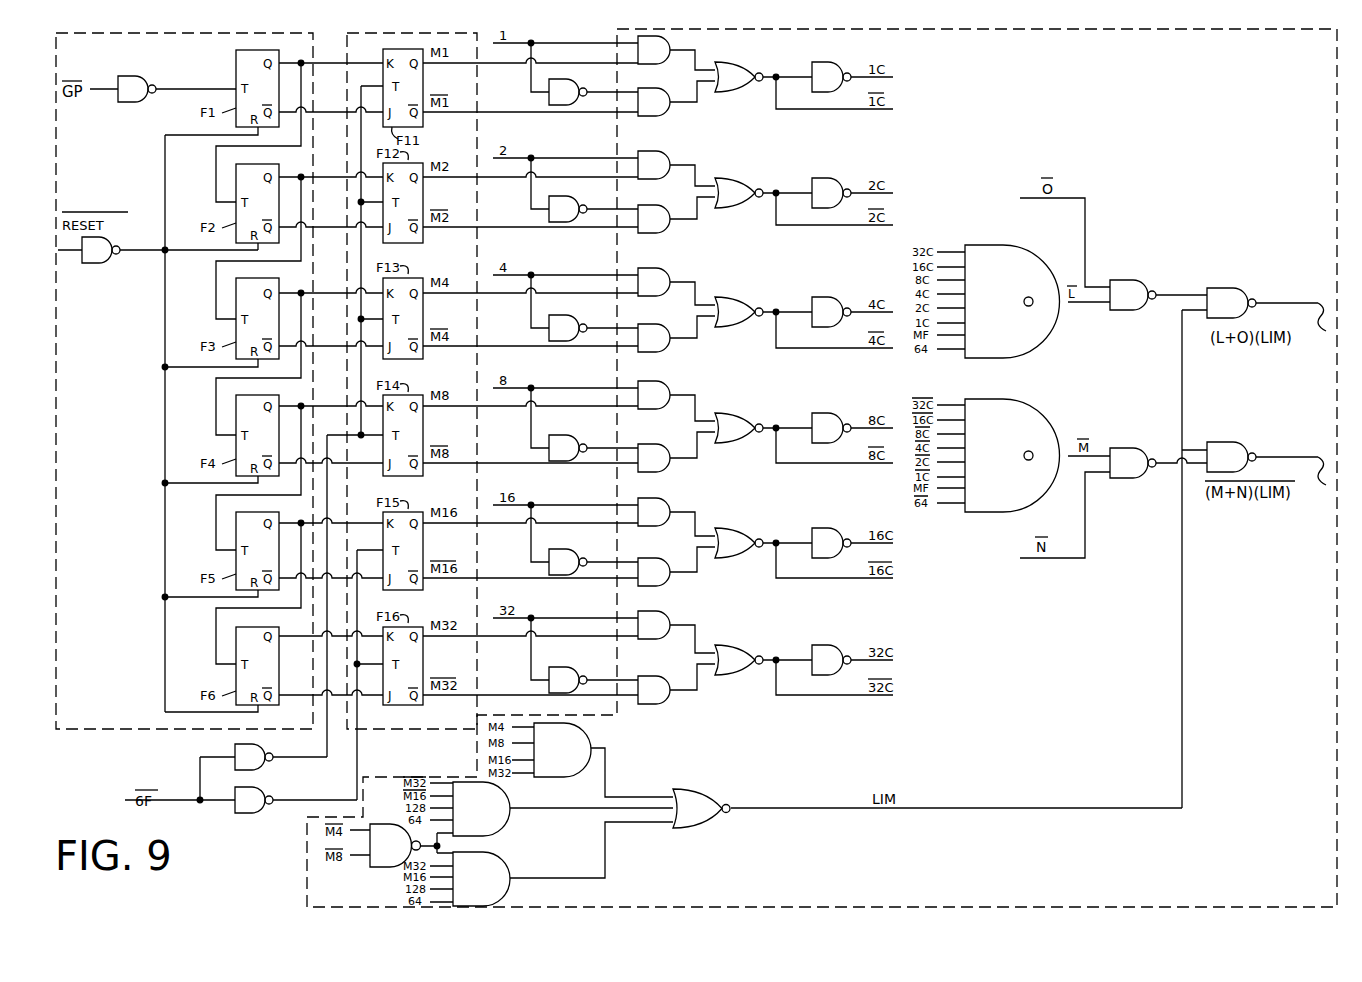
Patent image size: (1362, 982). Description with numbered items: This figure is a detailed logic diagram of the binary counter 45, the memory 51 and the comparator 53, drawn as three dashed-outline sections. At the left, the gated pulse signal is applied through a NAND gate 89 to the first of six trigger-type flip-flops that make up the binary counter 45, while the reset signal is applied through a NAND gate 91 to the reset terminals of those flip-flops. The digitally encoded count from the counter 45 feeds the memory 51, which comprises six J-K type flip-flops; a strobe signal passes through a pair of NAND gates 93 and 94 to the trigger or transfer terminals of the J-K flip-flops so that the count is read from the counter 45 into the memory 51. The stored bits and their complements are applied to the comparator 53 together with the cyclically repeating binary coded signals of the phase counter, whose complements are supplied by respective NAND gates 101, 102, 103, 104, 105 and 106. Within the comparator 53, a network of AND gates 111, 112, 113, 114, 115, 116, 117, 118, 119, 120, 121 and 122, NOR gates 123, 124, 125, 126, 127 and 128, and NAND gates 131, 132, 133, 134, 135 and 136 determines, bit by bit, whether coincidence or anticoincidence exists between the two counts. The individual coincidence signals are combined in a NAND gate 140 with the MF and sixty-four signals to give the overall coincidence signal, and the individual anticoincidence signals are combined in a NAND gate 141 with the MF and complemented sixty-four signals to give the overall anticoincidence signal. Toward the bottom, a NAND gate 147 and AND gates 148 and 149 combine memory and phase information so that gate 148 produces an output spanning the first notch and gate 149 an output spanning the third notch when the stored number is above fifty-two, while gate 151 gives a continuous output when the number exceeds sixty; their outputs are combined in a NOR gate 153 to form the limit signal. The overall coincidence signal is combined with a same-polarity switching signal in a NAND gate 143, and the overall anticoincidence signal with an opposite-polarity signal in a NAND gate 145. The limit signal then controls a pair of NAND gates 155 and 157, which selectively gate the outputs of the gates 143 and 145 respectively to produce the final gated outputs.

The binary counter 45 is at (117, 732).
The memory 51 is at (423, 732).
The comparator 53 is at (610, 138).
The NAND gate 89 is at (128, 103).
The NAND gate 91 is at (110, 263).
The NAND gate 93 is at (270, 770).
The NAND gate 94 is at (262, 813).
The NAND gate 101 is at (553, 89).
The NAND gate 102 is at (553, 206).
The NAND gate 103 is at (553, 325).
The NAND gate 104 is at (553, 445).
The NAND gate 105 is at (553, 559).
The NAND gate 106 is at (553, 677).
The AND gate 111 is at (672, 47).
The AND gate 112 is at (672, 114).
The AND gate 113 is at (672, 162).
The AND gate 114 is at (672, 231).
The AND gate 115 is at (672, 279).
The AND gate 116 is at (672, 350).
The AND gate 117 is at (672, 392).
The AND gate 118 is at (672, 470).
The AND gate 119 is at (672, 509).
The AND gate 120 is at (672, 584).
The AND gate 121 is at (672, 622).
The AND gate 122 is at (672, 702).
The NOR gate 123 is at (754, 52).
The NOR gate 124 is at (754, 168).
The NOR gate 125 is at (754, 287).
The NOR gate 126 is at (754, 403).
The NOR gate 127 is at (754, 518).
The NOR gate 128 is at (754, 635).
The NAND gate 131 is at (816, 65).
The NAND gate 132 is at (816, 181).
The NAND gate 133 is at (816, 300).
The NAND gate 134 is at (816, 416).
The NAND gate 135 is at (816, 531).
The NAND gate 136 is at (816, 648).
The NAND gate 140 is at (1040, 340).
The NAND gate 141 is at (1025, 416).
The NAND gate 143 is at (1122, 281).
The NAND gate 145 is at (1122, 482).
The NAND gate 147 is at (399, 822).
The AND gate 148 is at (505, 831).
The AND gate 149 is at (512, 894).
The NAND gate 151 is at (556, 777).
The NOR gate 153 is at (690, 828).
The NAND gate 155 is at (1240, 289).
The NAND gate 157 is at (1240, 443).